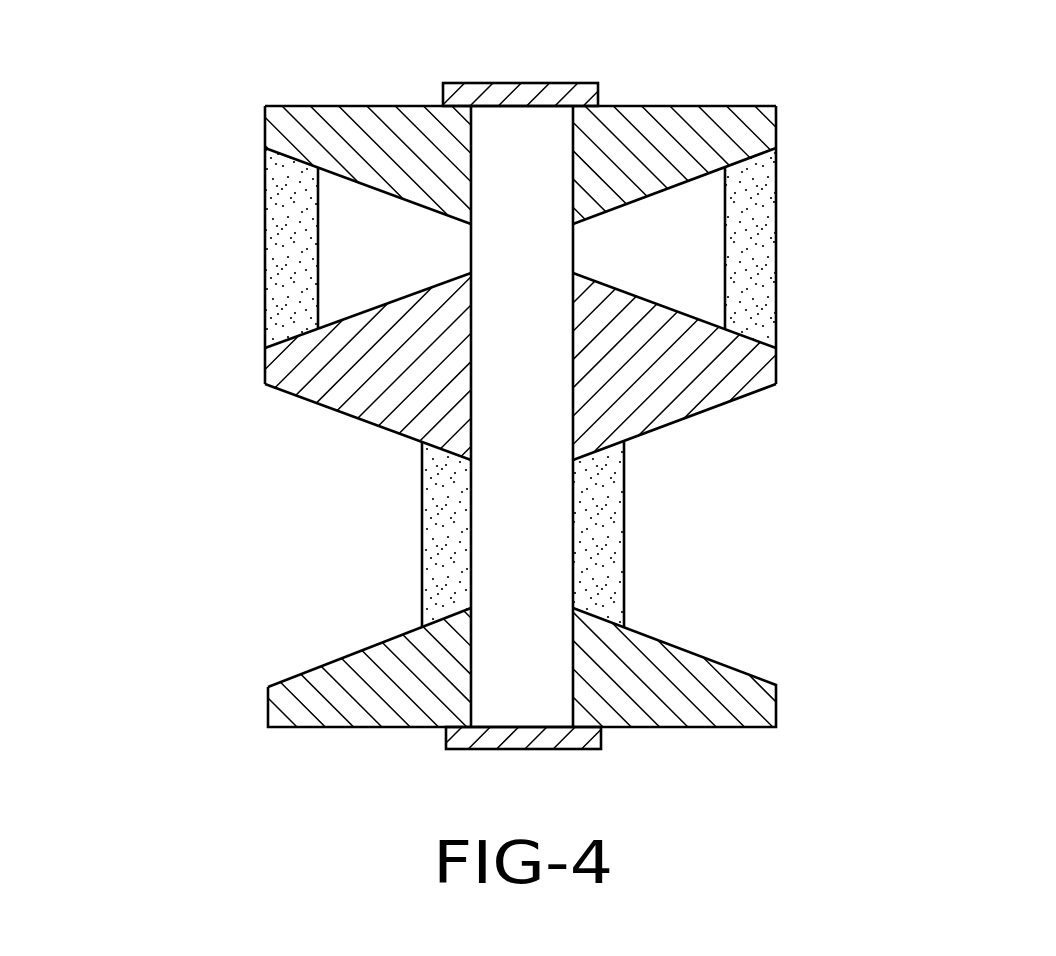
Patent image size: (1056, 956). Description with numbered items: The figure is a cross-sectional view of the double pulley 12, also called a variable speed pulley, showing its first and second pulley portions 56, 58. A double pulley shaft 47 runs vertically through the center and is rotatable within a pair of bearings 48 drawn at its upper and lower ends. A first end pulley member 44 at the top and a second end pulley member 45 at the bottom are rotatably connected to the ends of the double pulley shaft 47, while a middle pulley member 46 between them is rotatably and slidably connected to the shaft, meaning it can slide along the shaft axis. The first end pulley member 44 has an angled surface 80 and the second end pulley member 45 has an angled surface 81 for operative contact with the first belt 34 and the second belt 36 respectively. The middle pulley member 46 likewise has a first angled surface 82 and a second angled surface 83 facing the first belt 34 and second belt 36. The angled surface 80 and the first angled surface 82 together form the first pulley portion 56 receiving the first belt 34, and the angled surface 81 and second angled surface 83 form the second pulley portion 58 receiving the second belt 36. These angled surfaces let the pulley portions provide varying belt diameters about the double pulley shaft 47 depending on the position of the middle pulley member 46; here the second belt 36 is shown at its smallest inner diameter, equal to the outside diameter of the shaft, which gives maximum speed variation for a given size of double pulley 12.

The double pulley 12 is at (902, 130).
The double pulley shaft 47 is at (492, 155).
The bearings 48 is at (528, 90).
The first end pulley member 44 is at (692, 118).
The angled surface 80 is at (360, 186).
The first belt 34 is at (763, 212).
The first angled surface 82 is at (357, 315).
The second angled surface 83 is at (333, 407).
The middle pulley member 46 is at (516, 370).
The second belt 36 is at (598, 538).
The angled surface 81 is at (330, 663).
The second end pulley member 45 is at (518, 667).
The first pulley portion 56 is at (203, 233).
The second pulley portion 58 is at (205, 568).